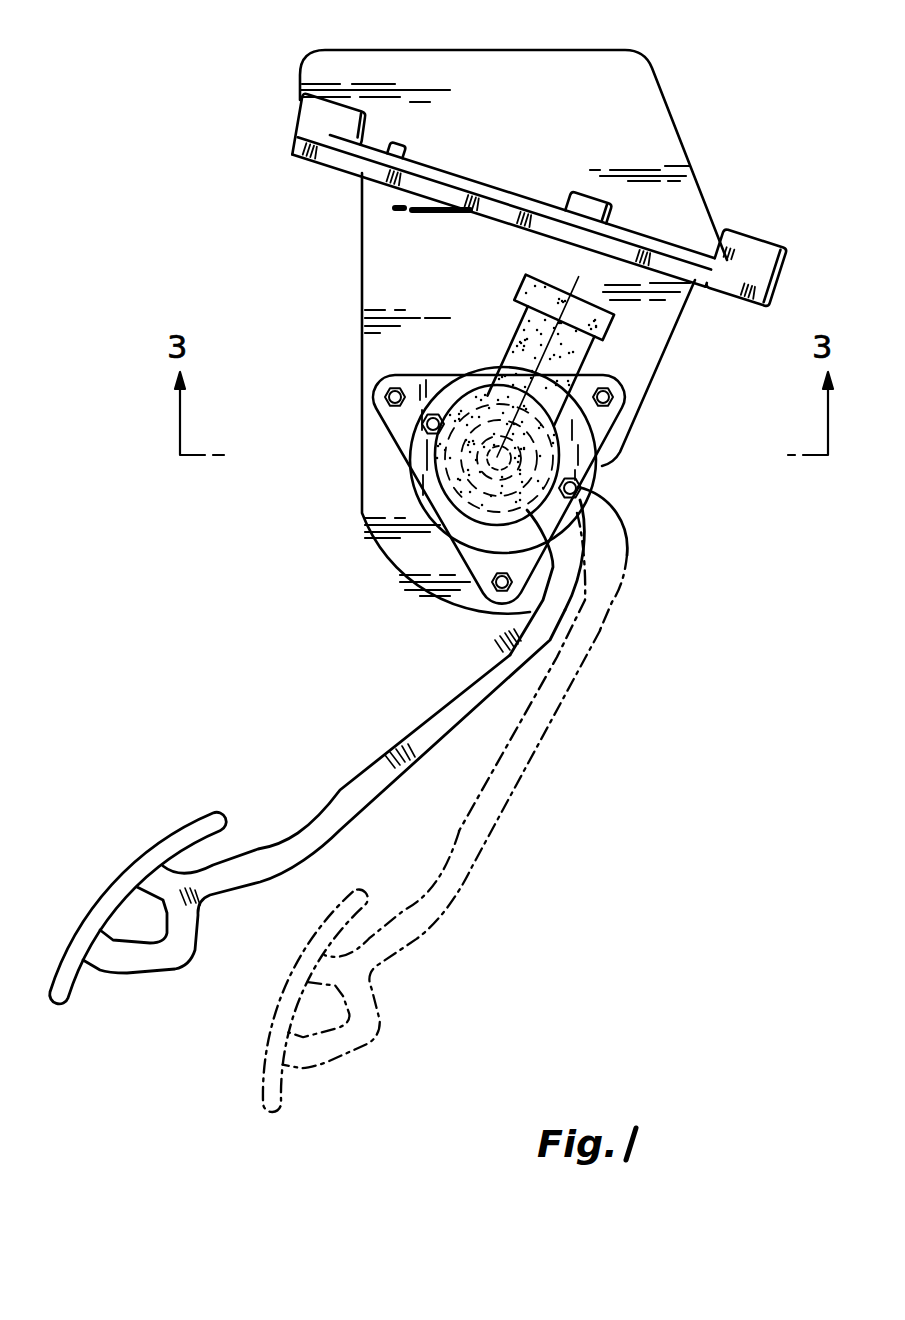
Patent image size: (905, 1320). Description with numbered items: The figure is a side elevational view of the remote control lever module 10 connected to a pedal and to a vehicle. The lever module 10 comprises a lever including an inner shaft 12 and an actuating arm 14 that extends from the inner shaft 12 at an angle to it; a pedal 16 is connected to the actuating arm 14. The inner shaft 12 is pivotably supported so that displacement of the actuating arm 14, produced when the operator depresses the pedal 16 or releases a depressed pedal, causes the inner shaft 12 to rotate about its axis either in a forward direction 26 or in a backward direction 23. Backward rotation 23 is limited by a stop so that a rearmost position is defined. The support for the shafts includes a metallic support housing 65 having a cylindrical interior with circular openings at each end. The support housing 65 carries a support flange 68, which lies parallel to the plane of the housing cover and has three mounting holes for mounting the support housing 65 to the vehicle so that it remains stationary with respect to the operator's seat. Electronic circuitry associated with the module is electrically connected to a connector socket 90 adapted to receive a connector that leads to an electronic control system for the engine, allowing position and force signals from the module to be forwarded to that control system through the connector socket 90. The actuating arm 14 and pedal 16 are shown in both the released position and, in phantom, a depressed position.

The remote control lever module 10 is at (346, 408).
The inner shaft 12 is at (490, 413).
The actuating arm 14 is at (490, 652).
The pedal 16 is at (178, 818).
The backward rotation 23 is at (440, 503).
The forward direction 26 is at (586, 462).
The support housing 65 is at (428, 494).
The support flange 68 is at (483, 547).
The connector socket 90 is at (545, 277).